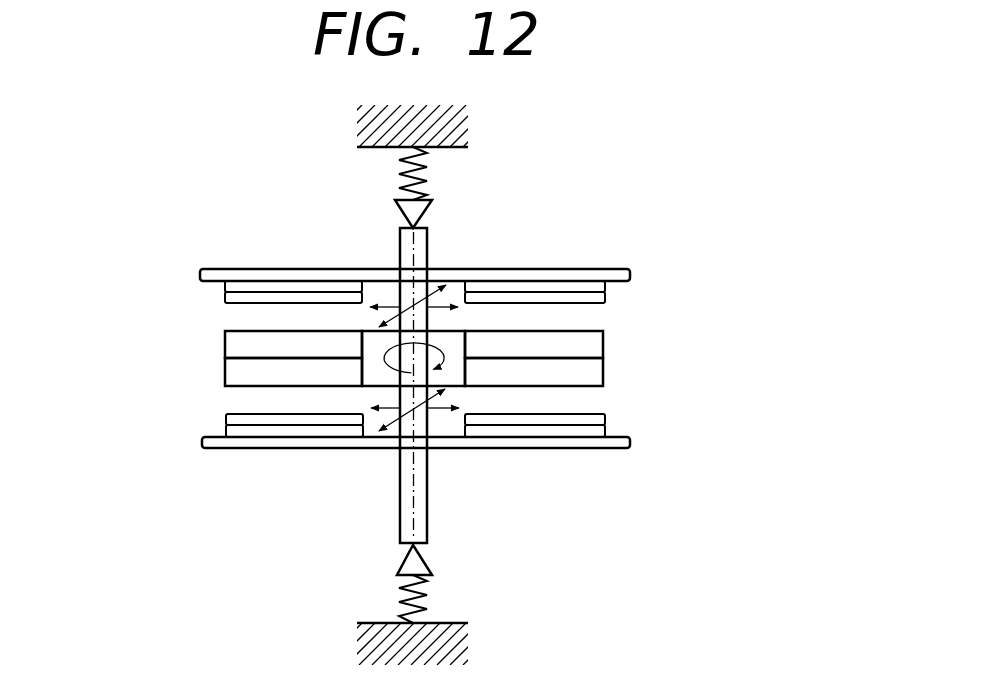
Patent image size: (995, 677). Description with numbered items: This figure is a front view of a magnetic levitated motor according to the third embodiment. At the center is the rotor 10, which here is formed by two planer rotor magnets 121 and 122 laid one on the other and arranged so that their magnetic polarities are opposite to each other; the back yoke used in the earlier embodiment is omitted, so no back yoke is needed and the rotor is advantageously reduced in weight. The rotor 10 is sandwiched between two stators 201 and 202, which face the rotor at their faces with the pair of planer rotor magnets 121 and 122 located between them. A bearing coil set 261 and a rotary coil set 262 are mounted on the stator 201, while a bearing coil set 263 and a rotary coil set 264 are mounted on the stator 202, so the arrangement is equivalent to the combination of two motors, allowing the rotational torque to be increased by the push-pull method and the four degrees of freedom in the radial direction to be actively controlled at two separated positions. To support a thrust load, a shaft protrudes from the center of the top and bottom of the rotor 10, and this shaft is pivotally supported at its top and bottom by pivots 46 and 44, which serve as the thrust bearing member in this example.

The rotor 10 is at (660, 371).
The pivot 44 is at (437, 562).
The pivot 46 is at (436, 211).
The planer rotor magnet 121 is at (605, 340).
The planer rotor magnet 122 is at (605, 380).
The stator 201 is at (623, 249).
The stator 202 is at (212, 468).
The bearing coil set 261 is at (606, 288).
The rotary coil set 262 is at (607, 298).
The bearing coil set 263 is at (226, 432).
The rotary coil set 264 is at (226, 421).